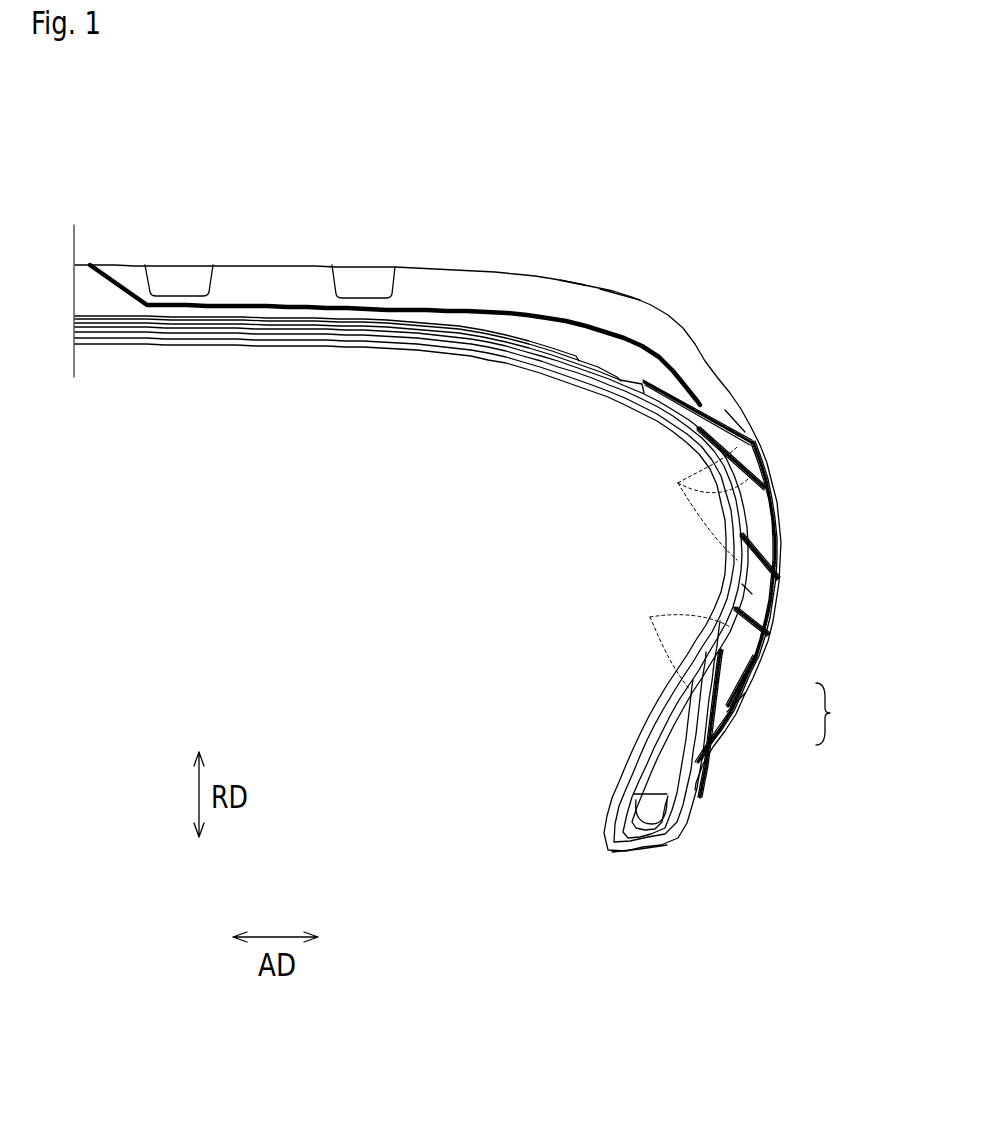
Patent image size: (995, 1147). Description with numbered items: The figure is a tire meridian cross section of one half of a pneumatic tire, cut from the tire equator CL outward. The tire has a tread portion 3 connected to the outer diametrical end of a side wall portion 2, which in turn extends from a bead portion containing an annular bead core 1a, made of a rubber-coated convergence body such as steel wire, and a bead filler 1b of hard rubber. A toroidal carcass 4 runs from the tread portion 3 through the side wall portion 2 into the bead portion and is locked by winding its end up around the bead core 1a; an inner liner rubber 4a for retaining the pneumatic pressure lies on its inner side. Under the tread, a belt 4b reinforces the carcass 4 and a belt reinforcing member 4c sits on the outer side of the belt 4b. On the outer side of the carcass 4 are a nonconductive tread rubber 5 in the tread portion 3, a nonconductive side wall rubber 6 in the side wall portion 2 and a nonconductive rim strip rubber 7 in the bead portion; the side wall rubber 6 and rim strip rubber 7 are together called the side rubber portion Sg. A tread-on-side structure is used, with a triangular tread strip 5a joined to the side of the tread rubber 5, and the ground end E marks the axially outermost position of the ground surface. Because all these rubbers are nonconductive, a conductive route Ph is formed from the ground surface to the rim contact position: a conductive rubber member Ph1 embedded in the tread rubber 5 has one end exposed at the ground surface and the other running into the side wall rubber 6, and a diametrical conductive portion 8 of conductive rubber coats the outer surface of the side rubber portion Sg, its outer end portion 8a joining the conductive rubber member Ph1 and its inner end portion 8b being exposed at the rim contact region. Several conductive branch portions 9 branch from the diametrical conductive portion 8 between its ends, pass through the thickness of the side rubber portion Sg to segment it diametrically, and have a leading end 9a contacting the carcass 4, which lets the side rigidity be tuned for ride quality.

The bead core 1a is at (638, 813).
The bead filler 1b is at (653, 762).
The side wall portion 2 is at (808, 595).
The tread portion 3 is at (244, 237).
The carcass 4 is at (232, 340).
The inner liner rubber 4a is at (495, 360).
The belt 4b is at (303, 330).
The belt reinforcing member 4c is at (367, 320).
The tread rubber 5 is at (315, 268).
The tread strip 5a is at (737, 425).
The side wall rubber 6 is at (742, 668).
The rim strip rubber 7 is at (728, 707).
The diametrical conductive portion 8 is at (783, 513).
The outer end portion 8a is at (707, 412).
The inner end portion 8b is at (713, 748).
The conductive branch portion 9 is at (703, 558).
The leading end 9a is at (747, 590).
The ground end E is at (572, 278).
The conductive route Ph is at (628, 318).
The conductive rubber member Ph1 is at (497, 310).
The tire equator CL is at (76, 285).
The side rubber portion Sg is at (841, 714).